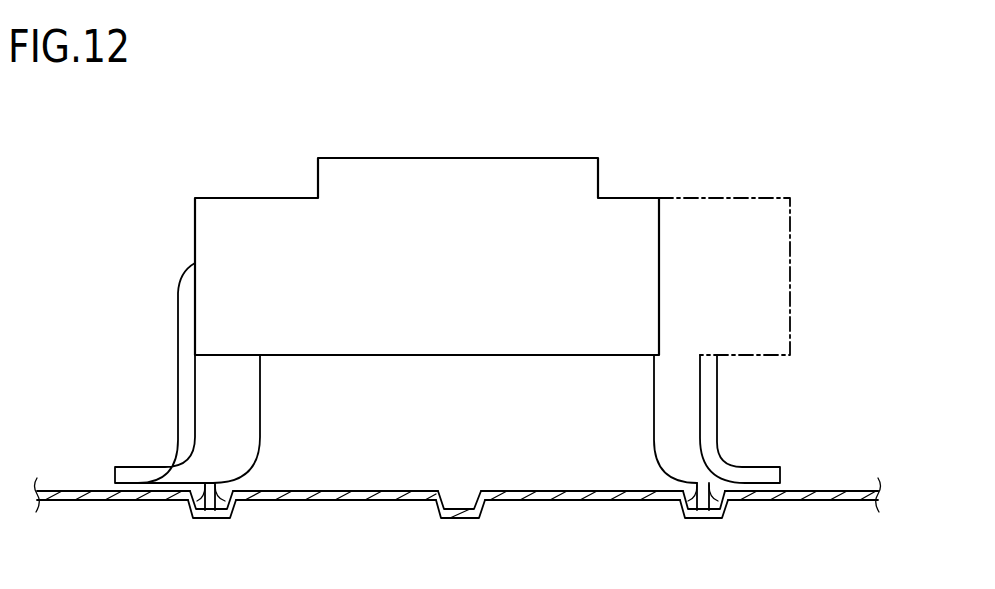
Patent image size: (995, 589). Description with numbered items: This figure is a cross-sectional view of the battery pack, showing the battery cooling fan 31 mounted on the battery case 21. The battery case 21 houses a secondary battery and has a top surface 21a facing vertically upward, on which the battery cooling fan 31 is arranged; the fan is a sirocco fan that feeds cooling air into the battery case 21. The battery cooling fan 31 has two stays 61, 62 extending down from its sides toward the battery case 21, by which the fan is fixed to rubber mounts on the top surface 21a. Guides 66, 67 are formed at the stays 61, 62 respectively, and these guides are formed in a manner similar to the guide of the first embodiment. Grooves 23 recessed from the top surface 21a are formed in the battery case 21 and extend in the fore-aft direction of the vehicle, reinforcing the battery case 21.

The battery cooling fan 31 is at (470, 185).
The stay 61 is at (186, 338).
The stay 62 is at (708, 383).
The groove 23 is at (203, 487).
The battery case 21 is at (97, 501).
The top surface 21a is at (836, 490).
The guide 66 is at (232, 519).
The guide 67 is at (682, 519).